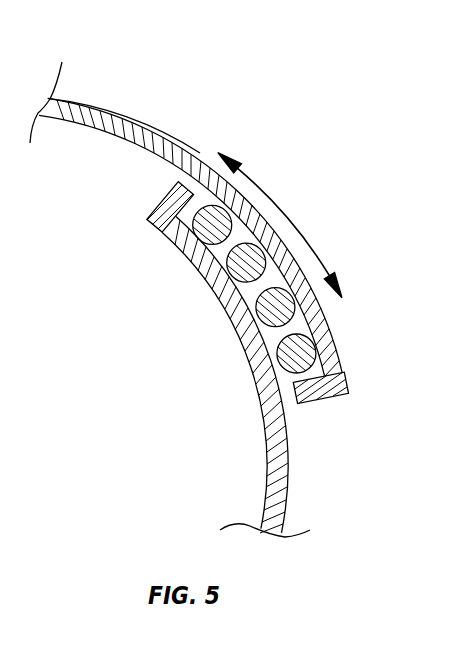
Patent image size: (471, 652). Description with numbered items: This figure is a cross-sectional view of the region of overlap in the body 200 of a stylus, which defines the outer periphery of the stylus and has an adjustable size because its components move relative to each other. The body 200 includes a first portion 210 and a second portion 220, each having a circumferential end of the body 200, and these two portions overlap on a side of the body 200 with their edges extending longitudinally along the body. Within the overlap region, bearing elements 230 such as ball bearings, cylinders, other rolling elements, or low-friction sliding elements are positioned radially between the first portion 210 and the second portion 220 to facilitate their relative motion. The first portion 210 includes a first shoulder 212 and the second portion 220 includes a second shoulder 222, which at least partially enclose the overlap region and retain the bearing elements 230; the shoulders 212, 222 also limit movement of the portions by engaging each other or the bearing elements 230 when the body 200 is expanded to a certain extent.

The body 200 is at (79, 100).
The second portion 220 is at (195, 152).
The first portion 210 is at (193, 278).
The first shoulder 212 is at (157, 204).
The second shoulder 222 is at (320, 404).
The bearing elements 230 is at (265, 212).